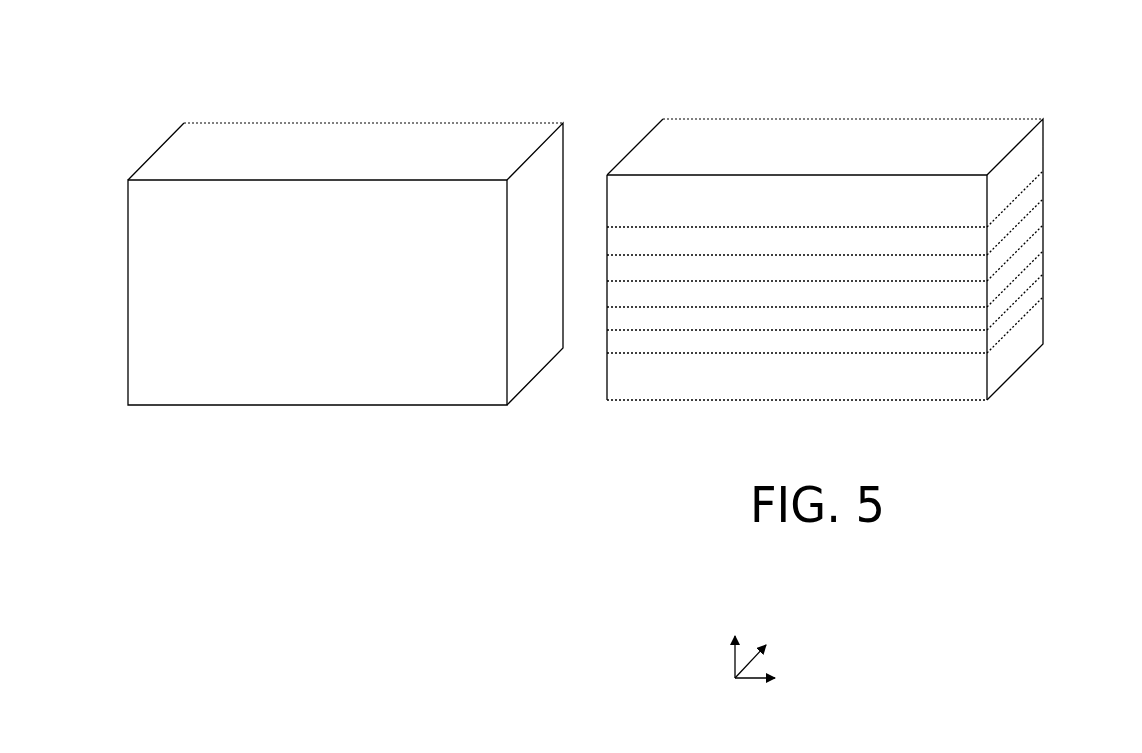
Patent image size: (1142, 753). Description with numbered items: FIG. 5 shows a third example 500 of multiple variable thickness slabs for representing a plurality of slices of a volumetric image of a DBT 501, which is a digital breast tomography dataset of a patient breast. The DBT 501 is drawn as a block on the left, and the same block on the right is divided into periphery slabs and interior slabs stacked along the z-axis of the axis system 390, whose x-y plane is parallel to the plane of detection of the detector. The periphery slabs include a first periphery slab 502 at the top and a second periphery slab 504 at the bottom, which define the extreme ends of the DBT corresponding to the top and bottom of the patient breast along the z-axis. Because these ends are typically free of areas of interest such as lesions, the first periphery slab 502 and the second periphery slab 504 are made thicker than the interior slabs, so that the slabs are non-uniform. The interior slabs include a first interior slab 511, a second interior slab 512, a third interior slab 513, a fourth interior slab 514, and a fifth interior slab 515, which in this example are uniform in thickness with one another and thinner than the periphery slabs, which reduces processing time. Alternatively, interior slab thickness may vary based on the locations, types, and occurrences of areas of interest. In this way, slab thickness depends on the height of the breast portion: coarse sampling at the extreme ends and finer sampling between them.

The third example 500 is at (1032, 50).
The DBT 501 is at (334, 304).
The first periphery slab 502 is at (1043, 163).
The first interior slab 511 is at (1043, 188).
The second interior slab 512 is at (1043, 210).
The third interior slab 513 is at (1043, 237).
The fourth interior slab 514 is at (1043, 263).
The fifth interior slab 515 is at (1043, 288).
The second periphery slab 504 is at (1043, 310).
The axis system 390 is at (807, 599).